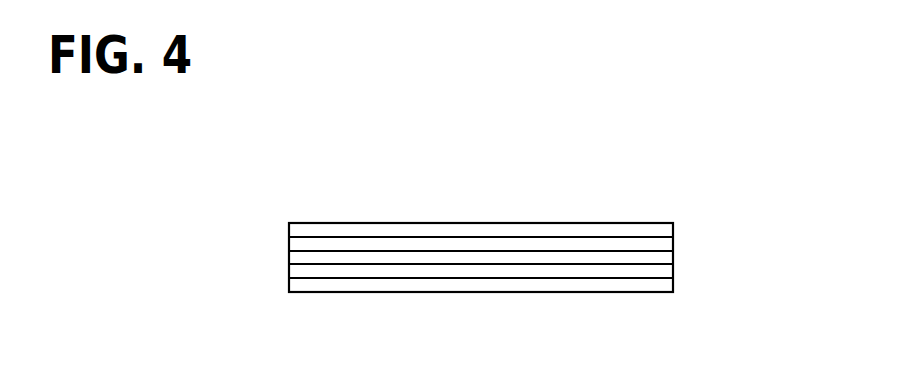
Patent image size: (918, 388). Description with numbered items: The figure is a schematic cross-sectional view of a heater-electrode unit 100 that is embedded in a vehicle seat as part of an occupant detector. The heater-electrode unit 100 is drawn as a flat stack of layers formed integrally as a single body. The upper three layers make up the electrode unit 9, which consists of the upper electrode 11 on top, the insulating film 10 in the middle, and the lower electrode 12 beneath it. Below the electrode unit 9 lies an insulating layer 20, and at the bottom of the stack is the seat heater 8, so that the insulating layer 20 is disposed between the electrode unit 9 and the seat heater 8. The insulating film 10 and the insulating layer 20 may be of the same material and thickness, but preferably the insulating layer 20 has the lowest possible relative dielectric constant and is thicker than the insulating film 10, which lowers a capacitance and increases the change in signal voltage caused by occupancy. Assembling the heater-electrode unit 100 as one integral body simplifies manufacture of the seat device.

The heater-electrode unit 100 is at (350, 201).
The electrode unit 9 is at (558, 233).
The upper electrode 11 is at (663, 230).
The insulating film 10 is at (663, 244).
The lower electrode 12 is at (535, 267).
The insulating layer 20 is at (663, 271).
The seat heater 8 is at (663, 285).